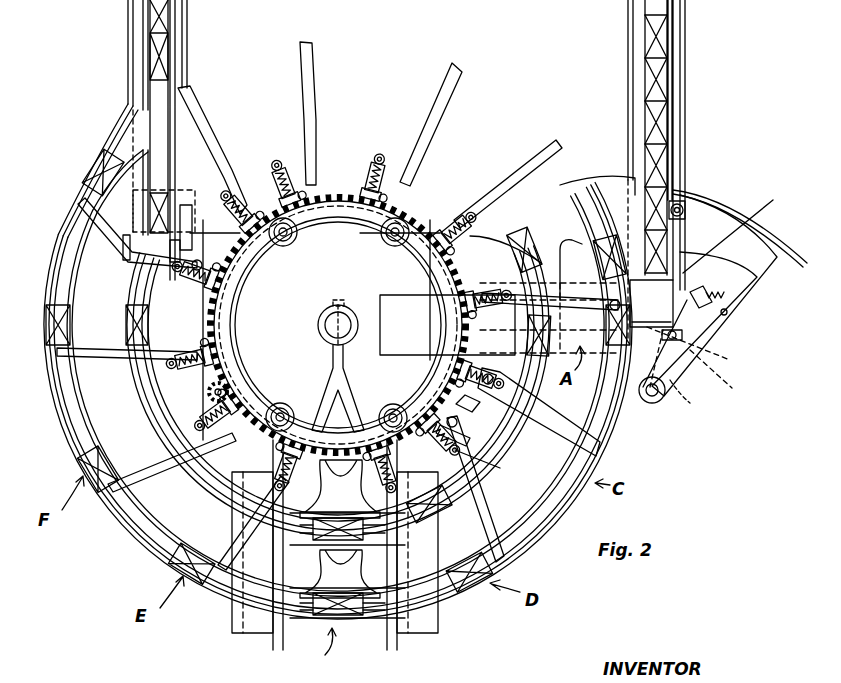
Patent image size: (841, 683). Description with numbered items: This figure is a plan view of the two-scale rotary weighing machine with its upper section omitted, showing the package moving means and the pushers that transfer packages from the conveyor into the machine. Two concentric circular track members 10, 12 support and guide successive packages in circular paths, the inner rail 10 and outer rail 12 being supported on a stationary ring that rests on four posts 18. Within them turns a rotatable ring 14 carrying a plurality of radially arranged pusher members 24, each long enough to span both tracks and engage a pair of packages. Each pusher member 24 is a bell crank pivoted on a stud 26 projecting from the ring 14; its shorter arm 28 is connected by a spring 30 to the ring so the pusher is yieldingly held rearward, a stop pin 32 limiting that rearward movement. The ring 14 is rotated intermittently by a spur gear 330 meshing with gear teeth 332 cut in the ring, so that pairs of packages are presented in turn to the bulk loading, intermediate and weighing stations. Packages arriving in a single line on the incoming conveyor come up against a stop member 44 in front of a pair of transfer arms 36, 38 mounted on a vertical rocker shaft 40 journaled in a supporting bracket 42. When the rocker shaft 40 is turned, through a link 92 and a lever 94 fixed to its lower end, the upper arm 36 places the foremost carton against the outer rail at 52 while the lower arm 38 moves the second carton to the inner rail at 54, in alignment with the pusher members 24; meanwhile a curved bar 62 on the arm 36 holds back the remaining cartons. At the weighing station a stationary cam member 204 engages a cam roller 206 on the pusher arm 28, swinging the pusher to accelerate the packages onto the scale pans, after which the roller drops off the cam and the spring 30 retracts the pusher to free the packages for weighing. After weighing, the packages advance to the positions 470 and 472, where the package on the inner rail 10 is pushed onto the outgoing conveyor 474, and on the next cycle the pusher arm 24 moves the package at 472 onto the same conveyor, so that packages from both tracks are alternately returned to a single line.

The circular track member 10 is at (597, 442).
The circular track member 12 is at (600, 446).
The ring 14 is at (465, 406).
The posts 18 is at (282, 247).
The pusher members 24 is at (443, 82).
The stud 26 is at (330, 178).
The shorter arm 28 is at (378, 167).
The spring 30 is at (438, 142).
The stop pin 32 is at (354, 216).
The transfer arm 36 is at (768, 268).
The transfer arm 38 is at (752, 290).
The rocker shaft 40 is at (662, 400).
The supporting bracket 42 is at (724, 375).
The stop member 44 is at (746, 234).
The outer guide rail position 52 is at (605, 257).
The inner guide rail position 54 is at (505, 249).
The curved bar 62 is at (733, 203).
The link 92 is at (699, 357).
The lever 94 is at (692, 397).
The stationary cam member 204 is at (490, 476).
The cam roller 206 is at (480, 432).
The spur gear 330 is at (210, 410).
The gear teeth 332 is at (200, 390).
The package position 470 is at (162, 185).
The package position 472 is at (112, 180).
The outgoing conveyor 474 is at (163, 87).